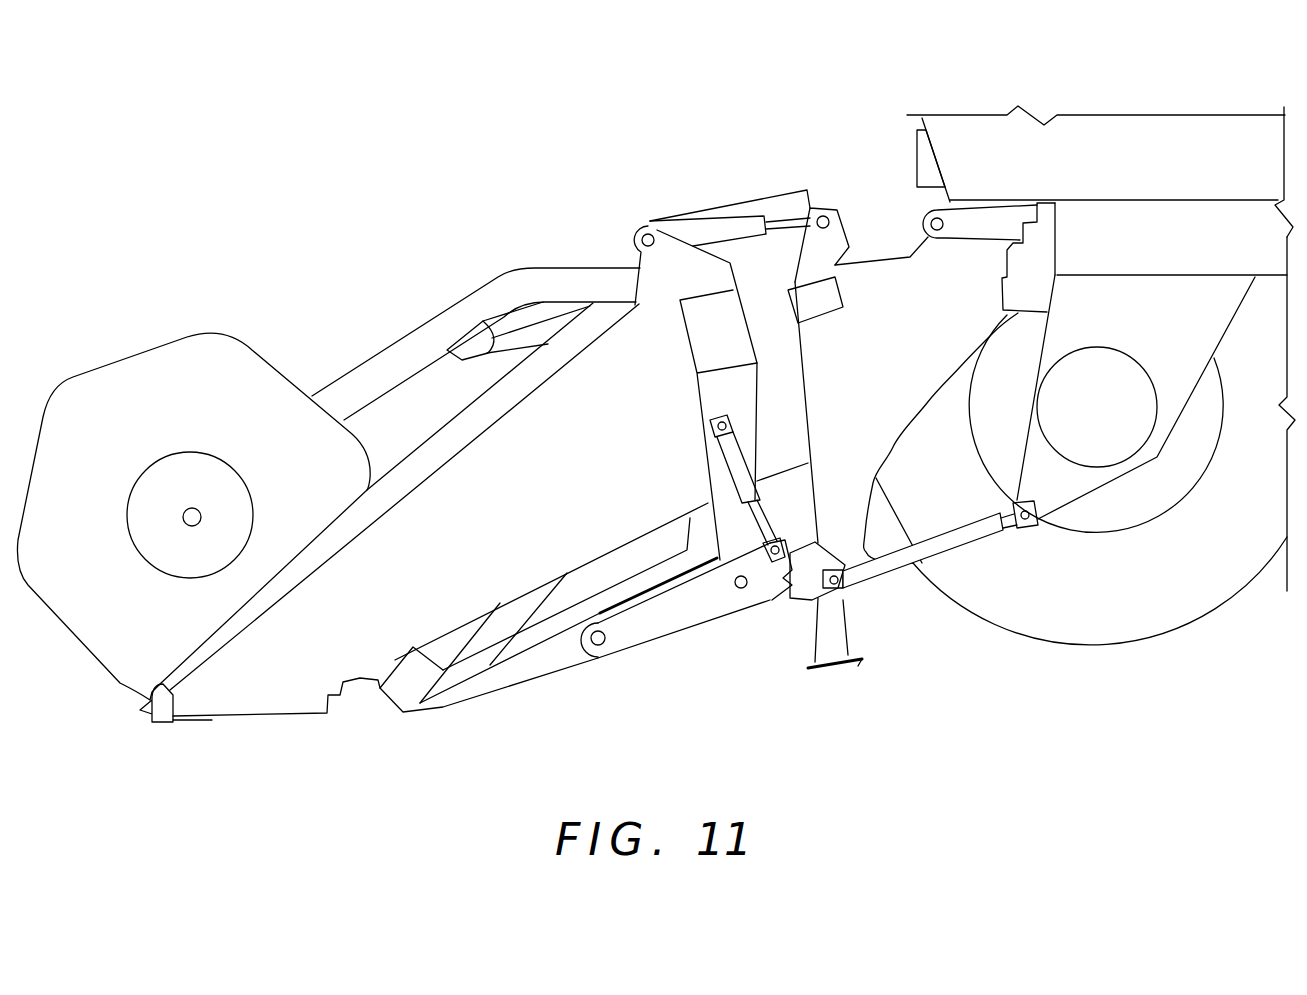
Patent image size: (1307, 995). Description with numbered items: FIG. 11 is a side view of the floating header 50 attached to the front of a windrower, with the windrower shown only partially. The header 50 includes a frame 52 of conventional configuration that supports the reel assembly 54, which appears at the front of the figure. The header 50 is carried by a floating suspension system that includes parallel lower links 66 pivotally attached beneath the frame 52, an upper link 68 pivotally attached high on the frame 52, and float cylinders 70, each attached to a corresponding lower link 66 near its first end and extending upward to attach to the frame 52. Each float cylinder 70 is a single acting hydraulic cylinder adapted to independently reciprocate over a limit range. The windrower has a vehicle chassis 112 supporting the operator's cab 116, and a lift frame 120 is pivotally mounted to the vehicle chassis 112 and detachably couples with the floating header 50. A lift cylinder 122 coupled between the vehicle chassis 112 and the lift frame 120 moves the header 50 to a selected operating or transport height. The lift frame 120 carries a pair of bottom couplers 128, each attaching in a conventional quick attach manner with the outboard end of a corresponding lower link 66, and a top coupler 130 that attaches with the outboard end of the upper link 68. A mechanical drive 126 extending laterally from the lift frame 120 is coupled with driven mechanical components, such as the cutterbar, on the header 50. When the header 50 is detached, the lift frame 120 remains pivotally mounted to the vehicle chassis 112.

The floating header 50 is at (481, 252).
The frame 52 is at (530, 665).
The reel assembly 54 is at (149, 348).
The lower link 66 is at (667, 622).
The upper link 68 is at (712, 222).
The float cylinder 70 is at (730, 455).
The vehicle chassis 112 is at (1222, 230).
The operator's cab 116 is at (1067, 140).
The lift frame 120 is at (870, 247).
The lift cylinder 122 is at (890, 560).
The mechanical drive 126 is at (843, 297).
The bottom coupler 128 is at (787, 601).
The top coupler 130 is at (818, 207).